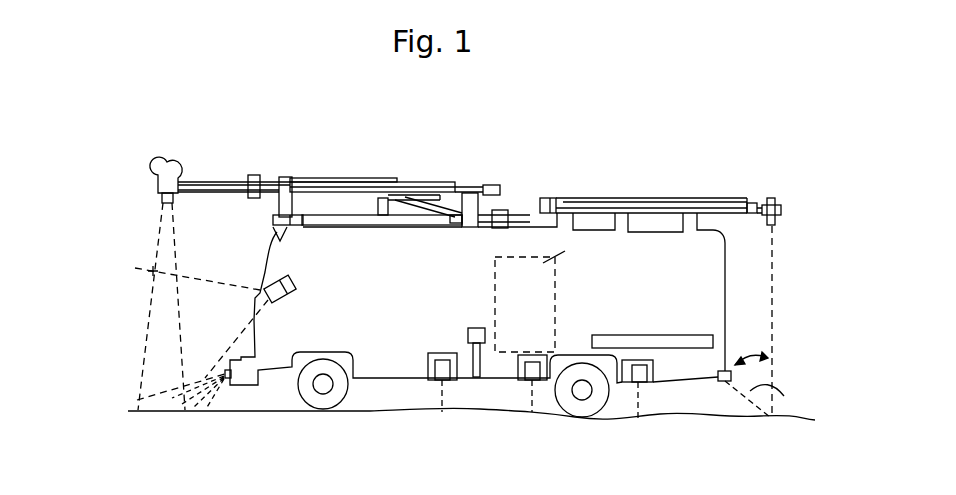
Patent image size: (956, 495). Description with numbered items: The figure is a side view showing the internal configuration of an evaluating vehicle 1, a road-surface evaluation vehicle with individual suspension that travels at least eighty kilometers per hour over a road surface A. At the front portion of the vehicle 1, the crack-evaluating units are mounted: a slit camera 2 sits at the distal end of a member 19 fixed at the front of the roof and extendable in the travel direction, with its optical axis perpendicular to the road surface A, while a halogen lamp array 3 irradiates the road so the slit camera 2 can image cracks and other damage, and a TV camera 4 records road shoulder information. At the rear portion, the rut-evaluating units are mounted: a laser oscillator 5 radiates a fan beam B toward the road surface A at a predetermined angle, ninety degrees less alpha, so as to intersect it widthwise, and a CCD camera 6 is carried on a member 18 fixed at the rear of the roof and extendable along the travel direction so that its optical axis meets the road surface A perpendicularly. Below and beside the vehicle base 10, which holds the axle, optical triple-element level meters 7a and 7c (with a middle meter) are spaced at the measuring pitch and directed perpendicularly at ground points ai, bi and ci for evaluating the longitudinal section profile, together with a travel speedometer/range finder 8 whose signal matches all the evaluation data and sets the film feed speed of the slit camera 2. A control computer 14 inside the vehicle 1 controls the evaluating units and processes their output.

The evaluating vehicle 1 is at (388, 303).
The slit camera 2 is at (182, 171).
The halogen lamp array 3 is at (229, 379).
The TV camera 4 is at (292, 286).
The laser oscillator 5 is at (670, 343).
The CCD camera 6 is at (781, 209).
The optical triple-element level meter 7a is at (441, 356).
The optical triple-element level meter 7c is at (637, 363).
The travel speedometer/range finder 8 is at (476, 328).
The vehicle base 10 is at (388, 380).
The control computer 14 is at (530, 313).
The member 18 is at (605, 199).
The member 19 is at (372, 183).
The road surface A is at (283, 413).
The fan beam B is at (773, 400).
The road surface point a ai is at (442, 412).
The road surface point b bi is at (532, 412).
The road surface point c ci is at (638, 418).